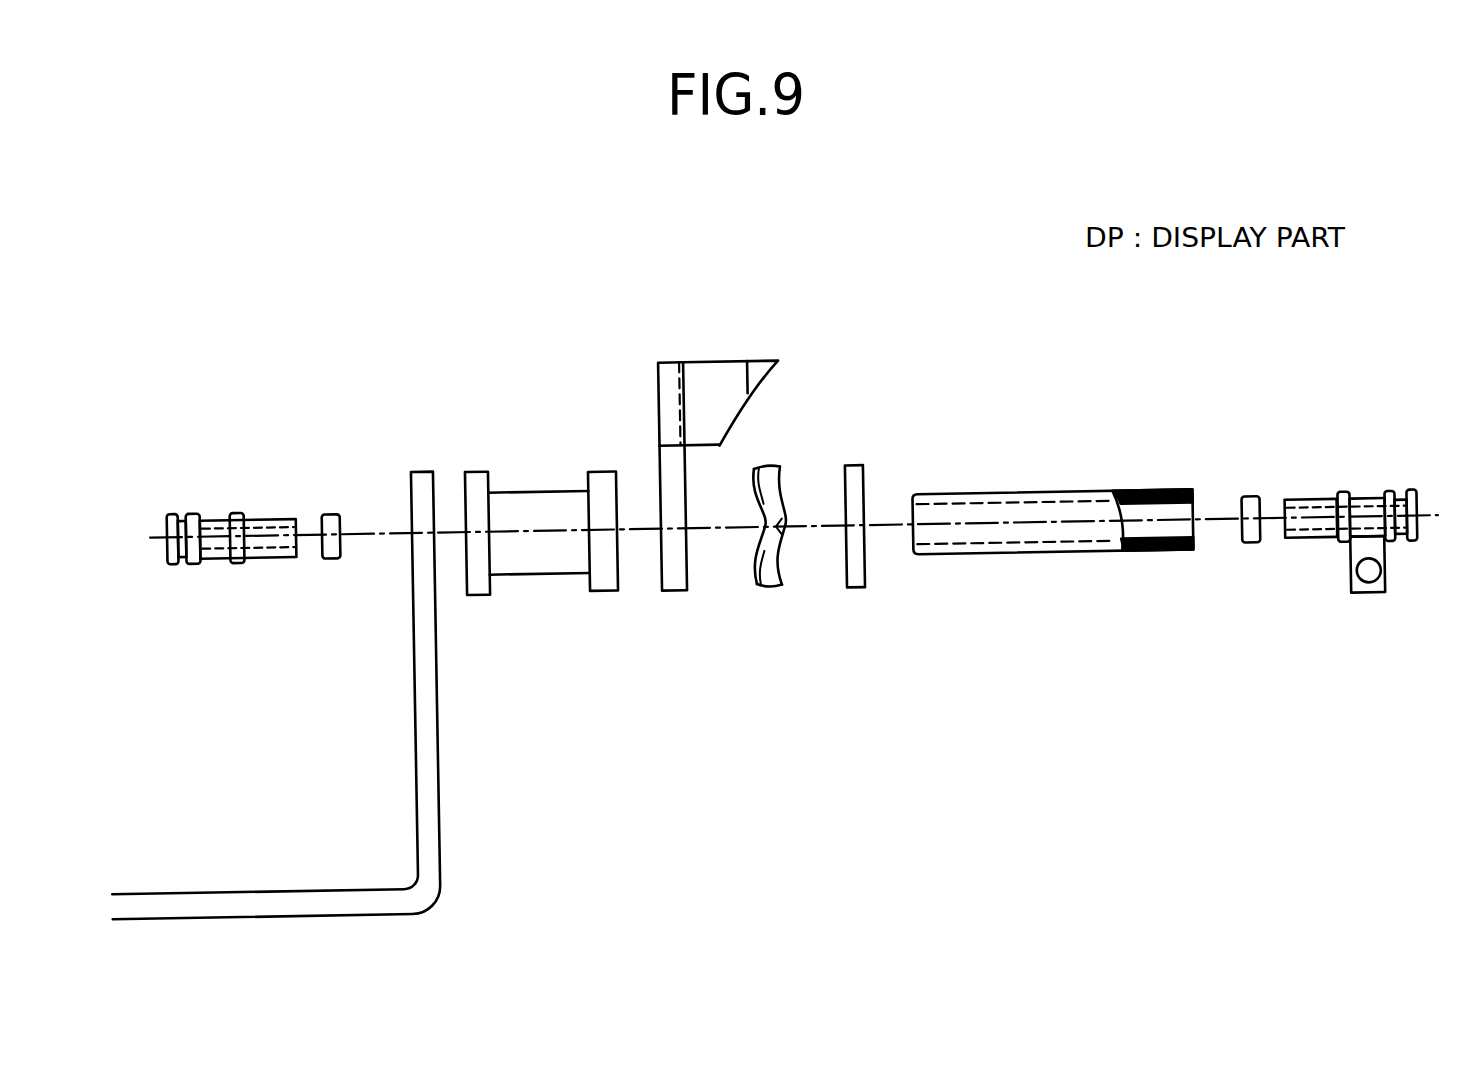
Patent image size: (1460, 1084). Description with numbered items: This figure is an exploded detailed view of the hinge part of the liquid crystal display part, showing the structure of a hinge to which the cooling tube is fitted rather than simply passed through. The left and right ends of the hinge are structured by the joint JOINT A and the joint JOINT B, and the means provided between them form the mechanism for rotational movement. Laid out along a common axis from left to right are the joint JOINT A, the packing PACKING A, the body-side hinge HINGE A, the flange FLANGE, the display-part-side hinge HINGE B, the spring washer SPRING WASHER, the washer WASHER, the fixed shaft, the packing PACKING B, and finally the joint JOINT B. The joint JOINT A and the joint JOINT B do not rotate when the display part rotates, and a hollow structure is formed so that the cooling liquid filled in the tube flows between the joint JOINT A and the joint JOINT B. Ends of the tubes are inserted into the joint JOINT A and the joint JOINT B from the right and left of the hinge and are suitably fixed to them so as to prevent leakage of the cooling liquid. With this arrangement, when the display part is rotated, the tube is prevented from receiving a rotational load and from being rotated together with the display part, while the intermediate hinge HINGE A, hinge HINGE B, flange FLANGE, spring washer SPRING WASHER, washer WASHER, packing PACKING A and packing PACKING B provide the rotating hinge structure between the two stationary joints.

The joint A JOINT A is at (262, 563).
The packing A PACKING A is at (333, 513).
The hinge A fixed to the body side HINGE A is at (417, 803).
The flange FLANGE is at (600, 590).
The hinge B fixed to the DP side HINGE B is at (692, 366).
The spring washer SPRING WASHER is at (768, 590).
The washer WASHER is at (855, 465).
The packing B PACKING B is at (1250, 497).
The joint B JOINT B is at (1302, 540).